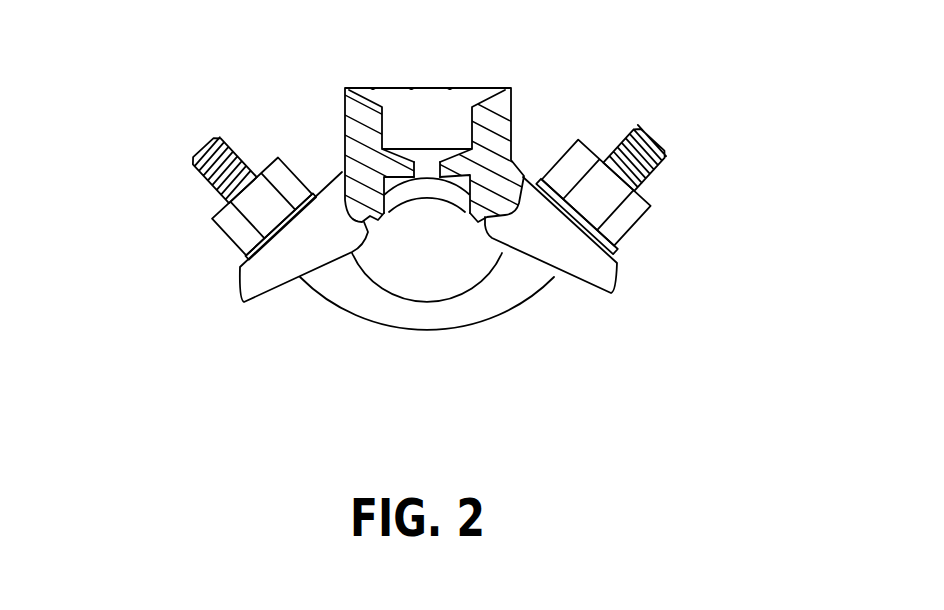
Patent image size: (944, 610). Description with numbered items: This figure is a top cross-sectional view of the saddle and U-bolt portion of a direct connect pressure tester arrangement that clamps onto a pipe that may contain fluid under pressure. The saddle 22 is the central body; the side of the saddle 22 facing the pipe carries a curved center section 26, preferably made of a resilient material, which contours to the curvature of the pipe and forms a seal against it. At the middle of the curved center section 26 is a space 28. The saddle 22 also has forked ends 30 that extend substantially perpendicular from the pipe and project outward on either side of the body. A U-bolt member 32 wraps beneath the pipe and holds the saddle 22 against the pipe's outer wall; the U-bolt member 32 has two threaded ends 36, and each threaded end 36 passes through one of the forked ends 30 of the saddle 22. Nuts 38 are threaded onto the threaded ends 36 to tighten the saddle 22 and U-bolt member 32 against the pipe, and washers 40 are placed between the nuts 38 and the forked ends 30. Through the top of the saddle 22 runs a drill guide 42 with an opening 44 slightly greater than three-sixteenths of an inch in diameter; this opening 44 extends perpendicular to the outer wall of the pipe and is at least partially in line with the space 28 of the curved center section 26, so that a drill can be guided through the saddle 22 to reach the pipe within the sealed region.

The saddle 22 is at (517, 103).
The curved center section 26 is at (398, 230).
The space 28 is at (445, 193).
The forked ends 30 is at (240, 280).
The U-bolt member 32 is at (317, 292).
The threaded ends 36 is at (200, 177).
The nuts 38 is at (223, 240).
The washers 40 is at (613, 250).
The drill guide 42 is at (413, 147).
The opening 44 is at (427, 175).